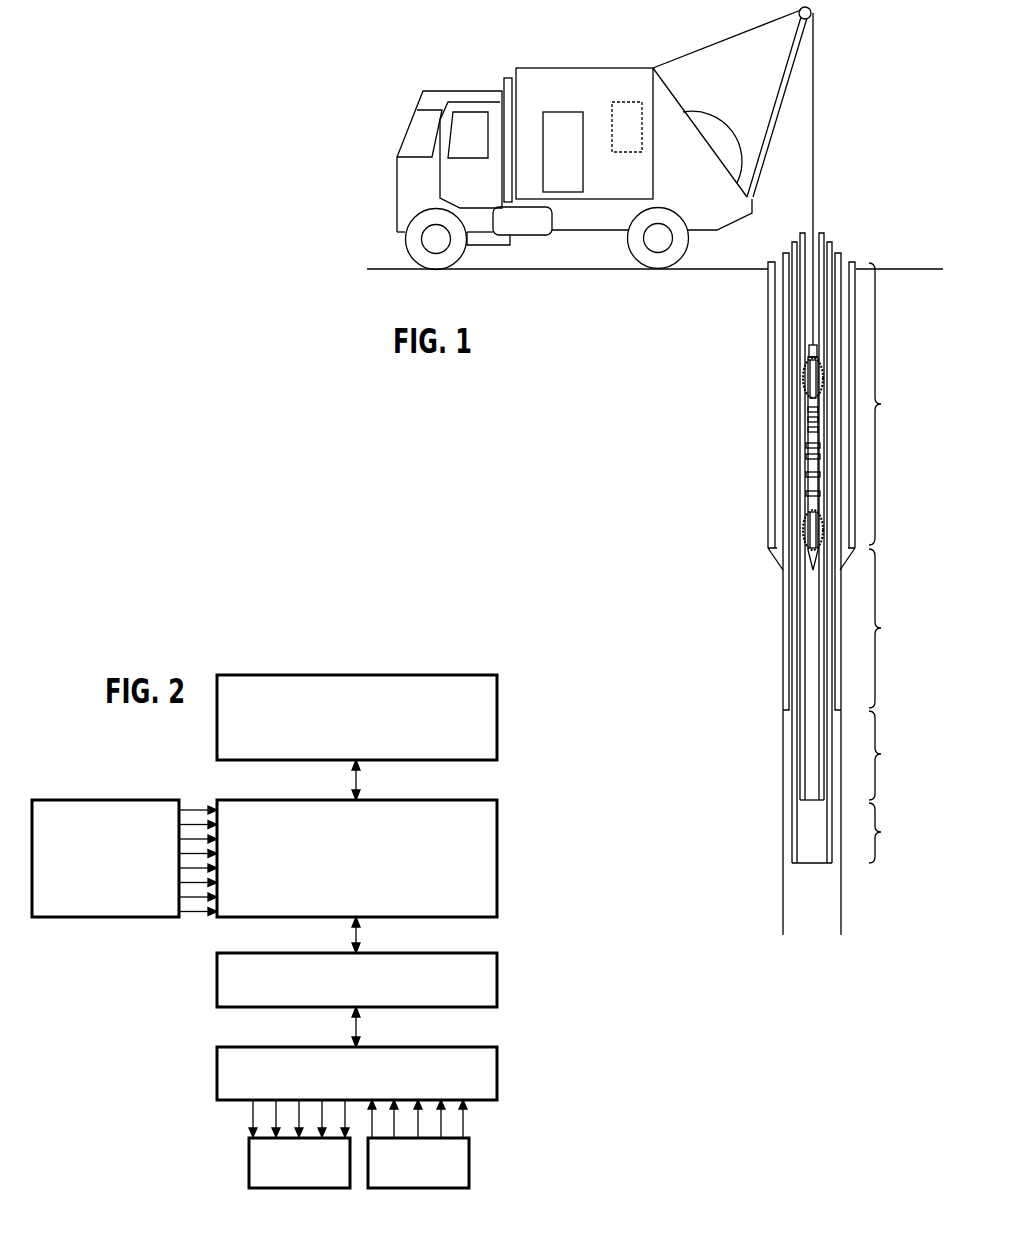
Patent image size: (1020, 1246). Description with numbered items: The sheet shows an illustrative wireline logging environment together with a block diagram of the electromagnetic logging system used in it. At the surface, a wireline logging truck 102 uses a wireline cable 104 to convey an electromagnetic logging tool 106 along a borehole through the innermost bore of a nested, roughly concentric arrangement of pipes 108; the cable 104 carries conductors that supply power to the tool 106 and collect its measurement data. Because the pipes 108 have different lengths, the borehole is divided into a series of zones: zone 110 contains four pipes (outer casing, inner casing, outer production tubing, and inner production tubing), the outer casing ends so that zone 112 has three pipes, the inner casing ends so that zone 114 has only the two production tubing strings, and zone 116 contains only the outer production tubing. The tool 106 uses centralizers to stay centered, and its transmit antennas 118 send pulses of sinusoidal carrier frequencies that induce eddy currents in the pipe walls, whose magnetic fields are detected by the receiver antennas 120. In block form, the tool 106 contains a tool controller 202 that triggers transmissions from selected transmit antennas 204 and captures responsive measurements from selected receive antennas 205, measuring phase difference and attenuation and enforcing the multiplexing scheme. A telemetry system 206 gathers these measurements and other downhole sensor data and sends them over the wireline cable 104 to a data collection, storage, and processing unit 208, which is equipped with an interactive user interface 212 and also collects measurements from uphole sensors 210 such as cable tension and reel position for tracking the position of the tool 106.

In FIG. 1, the wireline logging truck 102 is at (538, 68).
In FIG. 1, the wireline cable 104 is at (815, 193).
In FIG. 1, the electromagnetic logging tool 106 is at (807, 362).
In FIG. 1, the pipes 108 is at (822, 234).
In FIG. 1, the zone 110 is at (897, 404).
In FIG. 1, the zone 112 is at (897, 628).
In FIG. 1, the zone 114 is at (897, 755).
In FIG. 1, the zone 116 is at (897, 833).
In FIG. 1, the transmit antennas 118 is at (807, 445).
In FIG. 1, the receiver antennas 120 is at (808, 410).
In FIG. 2, the tool controller 202 is at (447, 1047).
In FIG. 2, the transmit antennas 204 is at (292, 1188).
In FIG. 2, the receive antennas 205 is at (410, 1188).
In FIG. 2, the telemetry system 206 is at (262, 1007).
In FIG. 1, the data collection, storage, and processing unit 208 is at (630, 100).
In FIG. 2, the data collection, storage, and processing unit 208 is at (262, 915).
In FIG. 2, the uphole sensors 210 is at (78, 917).
In FIG. 2, the interactive user interface 212 is at (262, 760).